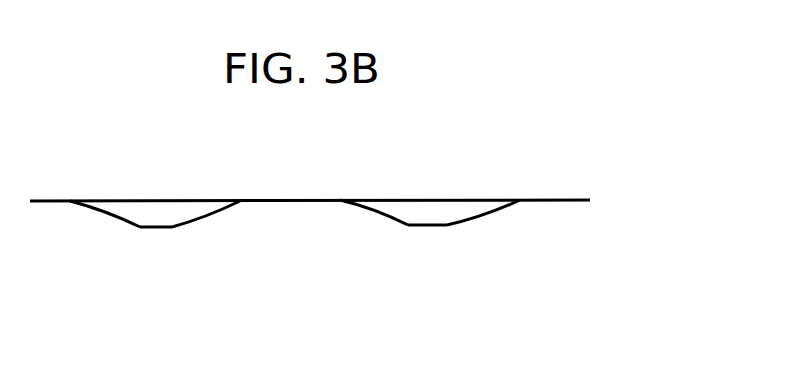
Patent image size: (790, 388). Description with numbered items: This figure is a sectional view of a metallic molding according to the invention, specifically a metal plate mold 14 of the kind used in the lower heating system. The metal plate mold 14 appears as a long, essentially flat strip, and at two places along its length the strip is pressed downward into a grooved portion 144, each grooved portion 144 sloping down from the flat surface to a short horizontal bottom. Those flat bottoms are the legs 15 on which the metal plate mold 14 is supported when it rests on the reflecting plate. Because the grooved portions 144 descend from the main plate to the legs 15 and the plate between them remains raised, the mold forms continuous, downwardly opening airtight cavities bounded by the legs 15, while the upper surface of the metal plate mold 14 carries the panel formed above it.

The metal plate mold 14 is at (562, 196).
The grooved portion 144 is at (418, 212).
The leg 15 is at (425, 227).